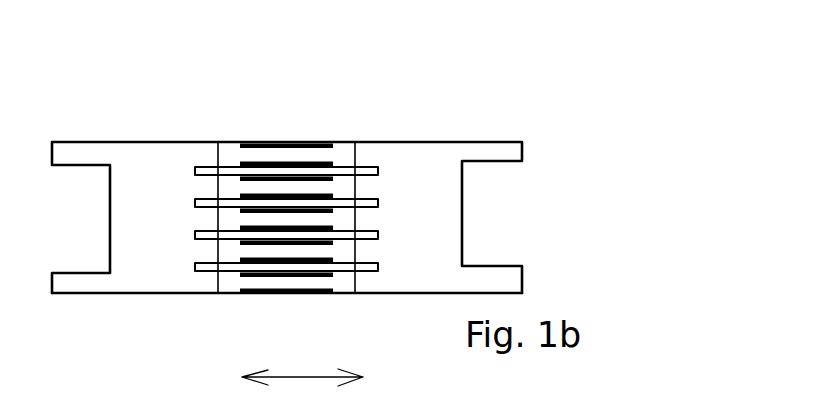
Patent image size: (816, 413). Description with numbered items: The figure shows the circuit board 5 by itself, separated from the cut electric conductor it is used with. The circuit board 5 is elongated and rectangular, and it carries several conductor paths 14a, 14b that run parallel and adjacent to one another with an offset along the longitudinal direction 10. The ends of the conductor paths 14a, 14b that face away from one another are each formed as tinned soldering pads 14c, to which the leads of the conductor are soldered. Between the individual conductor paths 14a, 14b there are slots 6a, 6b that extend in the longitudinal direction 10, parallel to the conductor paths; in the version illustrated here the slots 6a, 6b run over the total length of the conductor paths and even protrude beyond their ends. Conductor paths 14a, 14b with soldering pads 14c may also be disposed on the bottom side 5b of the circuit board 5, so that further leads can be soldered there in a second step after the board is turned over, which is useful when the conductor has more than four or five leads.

The circuit board 5 is at (118, 94).
The bottom side of the circuit board 5b is at (107, 328).
The slot 6a is at (363, 172).
The slot 6b is at (368, 206).
The longitudinal direction 10 is at (293, 377).
The conductor path 14a is at (288, 155).
The conductor path 14b is at (260, 182).
The soldering pad 14c is at (342, 155).